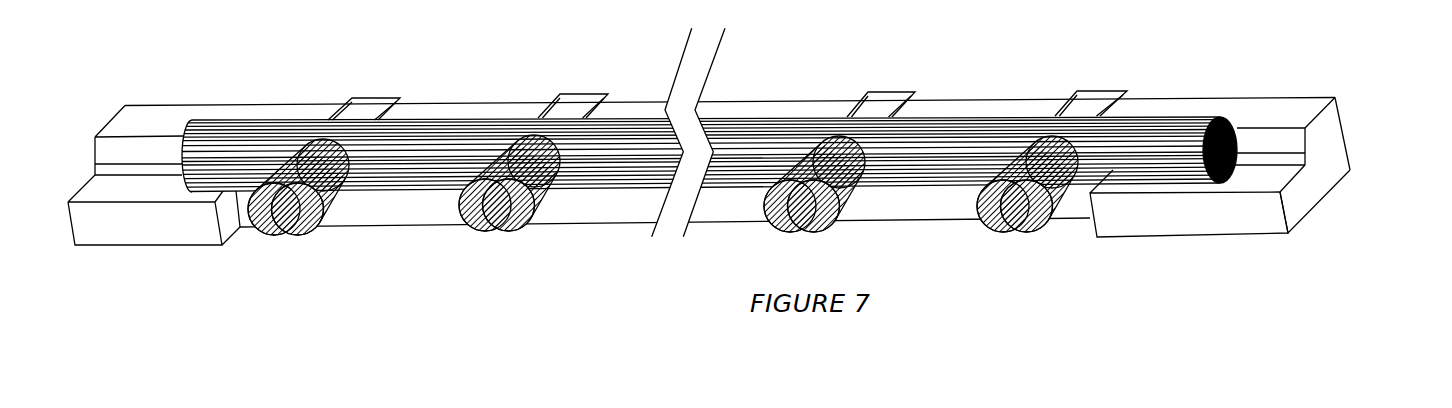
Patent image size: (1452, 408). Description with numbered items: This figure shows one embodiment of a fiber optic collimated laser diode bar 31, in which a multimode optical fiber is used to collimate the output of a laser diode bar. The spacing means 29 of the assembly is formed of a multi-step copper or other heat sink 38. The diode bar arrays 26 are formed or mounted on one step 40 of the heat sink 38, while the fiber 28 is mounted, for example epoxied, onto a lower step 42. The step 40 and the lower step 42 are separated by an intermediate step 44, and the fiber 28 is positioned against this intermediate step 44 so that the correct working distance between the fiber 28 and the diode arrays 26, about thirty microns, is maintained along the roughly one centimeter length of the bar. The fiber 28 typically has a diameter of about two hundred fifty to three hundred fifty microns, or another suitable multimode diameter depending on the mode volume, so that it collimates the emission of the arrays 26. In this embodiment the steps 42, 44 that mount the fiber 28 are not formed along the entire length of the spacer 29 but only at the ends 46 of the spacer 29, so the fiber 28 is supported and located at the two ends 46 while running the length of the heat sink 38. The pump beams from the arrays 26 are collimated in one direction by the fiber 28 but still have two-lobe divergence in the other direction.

The diode arrays 26 is at (1228, 92).
The fiber 28 is at (272, 118).
The spacing means 29 is at (1260, 255).
The fiber optic collimated laser diode bar 31 is at (410, 70).
The heat sink 38 is at (1338, 158).
The step 40 is at (1307, 108).
The lower step 42 is at (1302, 180).
The intermediate step 44 is at (1313, 157).
The ends 46 is at (137, 228).